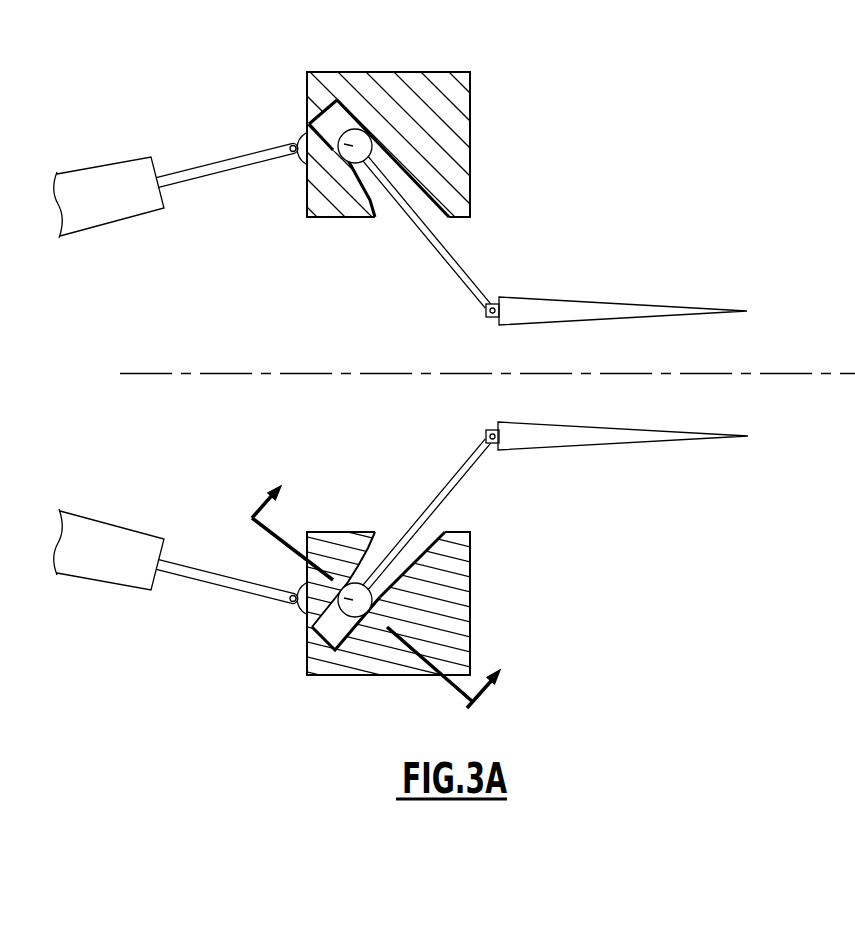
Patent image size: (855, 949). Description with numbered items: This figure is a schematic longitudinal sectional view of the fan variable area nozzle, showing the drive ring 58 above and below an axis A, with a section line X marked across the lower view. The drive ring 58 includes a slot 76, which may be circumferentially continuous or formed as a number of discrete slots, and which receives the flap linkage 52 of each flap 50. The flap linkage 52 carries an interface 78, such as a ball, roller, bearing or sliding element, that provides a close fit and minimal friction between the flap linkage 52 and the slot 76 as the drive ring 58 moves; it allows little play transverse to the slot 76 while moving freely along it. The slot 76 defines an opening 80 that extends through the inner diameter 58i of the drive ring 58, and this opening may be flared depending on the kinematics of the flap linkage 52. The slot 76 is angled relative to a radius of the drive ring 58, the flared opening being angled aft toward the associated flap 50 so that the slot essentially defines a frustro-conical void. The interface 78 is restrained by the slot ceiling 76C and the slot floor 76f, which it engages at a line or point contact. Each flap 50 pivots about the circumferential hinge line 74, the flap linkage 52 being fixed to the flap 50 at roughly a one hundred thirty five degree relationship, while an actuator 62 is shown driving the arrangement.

The flap 50 is at (588, 310).
The flap linkage 52 is at (461, 266).
The drive ring 58 is at (383, 62).
The inner diameter of the drive ring 58i is at (310, 218).
The actuator 62 is at (112, 178).
The circumferential hinge line 74 is at (490, 322).
The slot 76 is at (356, 645).
The slot ceiling 76C is at (409, 181).
The slot floor 76f is at (369, 190).
The interface 78 is at (340, 141).
The opening 80 is at (387, 210).
The axis A is at (784, 375).
The section line X is at (381, 592).